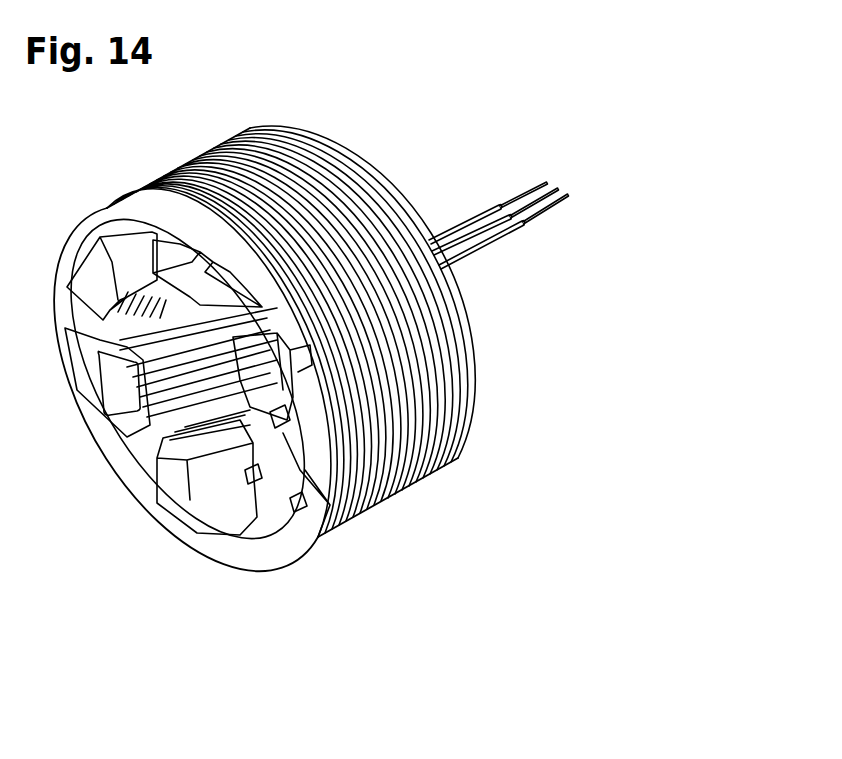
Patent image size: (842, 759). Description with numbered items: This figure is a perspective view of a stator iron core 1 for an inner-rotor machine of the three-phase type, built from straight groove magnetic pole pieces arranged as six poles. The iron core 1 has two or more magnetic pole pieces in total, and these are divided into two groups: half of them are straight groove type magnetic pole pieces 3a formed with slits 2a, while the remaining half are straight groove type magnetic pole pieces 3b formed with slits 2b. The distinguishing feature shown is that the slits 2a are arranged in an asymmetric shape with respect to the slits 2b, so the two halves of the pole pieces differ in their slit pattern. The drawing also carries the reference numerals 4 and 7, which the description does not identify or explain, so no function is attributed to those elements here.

The iron core 1 is at (407, 422).
The slits 2a is at (292, 362).
The slits 2b is at (275, 420).
The straight groove type magnetic pole pieces 3a is at (303, 378).
The straight groove type magnetic pole pieces 3b is at (300, 520).
The coil 4 is at (313, 490).
The lead wires 7 is at (468, 223).